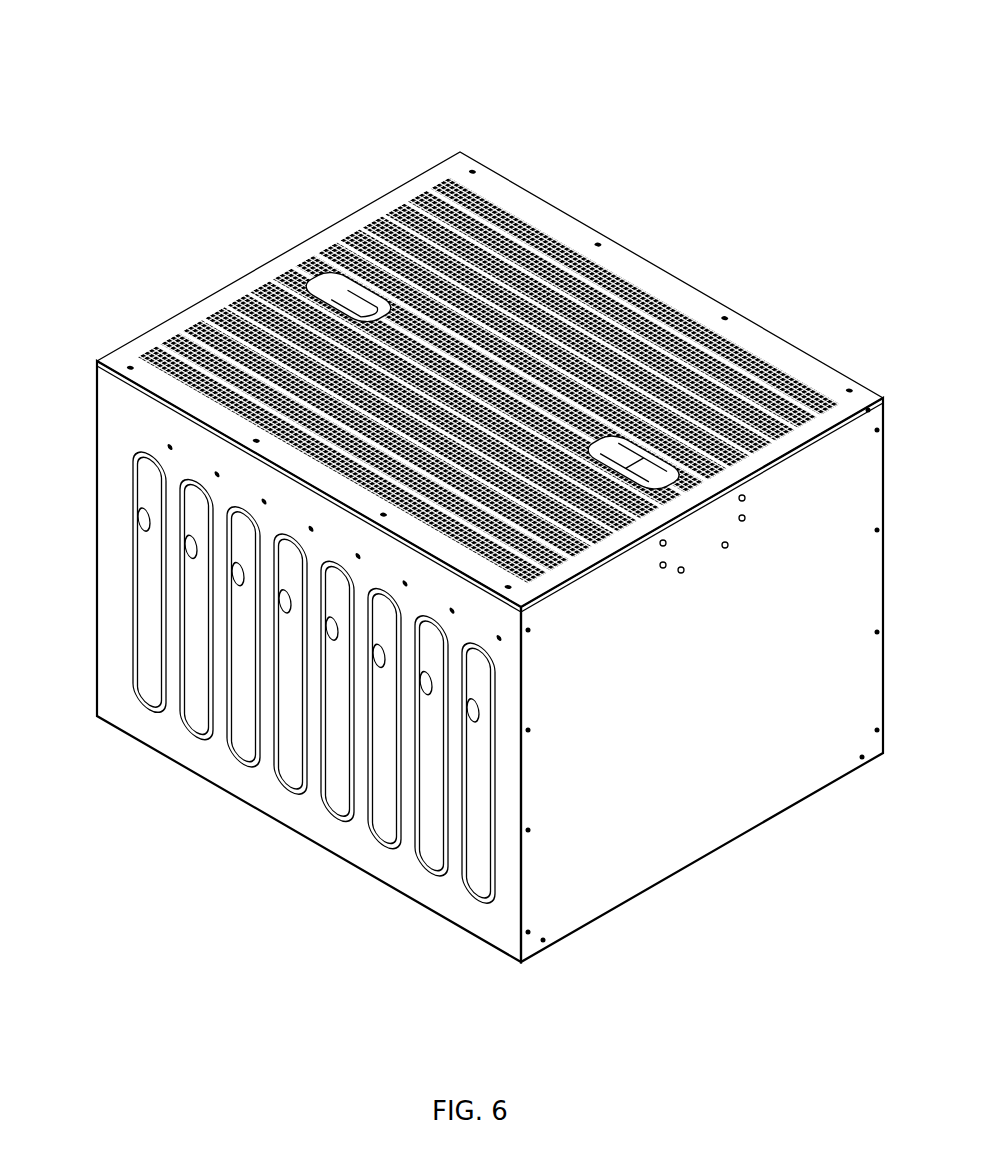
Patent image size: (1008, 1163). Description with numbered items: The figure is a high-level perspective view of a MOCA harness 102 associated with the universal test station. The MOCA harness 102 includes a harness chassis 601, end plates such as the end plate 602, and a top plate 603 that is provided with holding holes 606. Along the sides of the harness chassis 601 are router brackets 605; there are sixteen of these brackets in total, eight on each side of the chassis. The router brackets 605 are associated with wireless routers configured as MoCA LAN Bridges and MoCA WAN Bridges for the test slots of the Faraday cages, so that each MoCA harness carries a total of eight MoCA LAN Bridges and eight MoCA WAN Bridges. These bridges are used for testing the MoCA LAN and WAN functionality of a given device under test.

The MOCA harness 102 is at (754, 44).
The harness chassis 601 is at (127, 431).
The end plate 602 is at (693, 827).
The top plate 603 is at (508, 195).
The router bracket 605 is at (153, 639).
The holding hole 606 is at (352, 298).